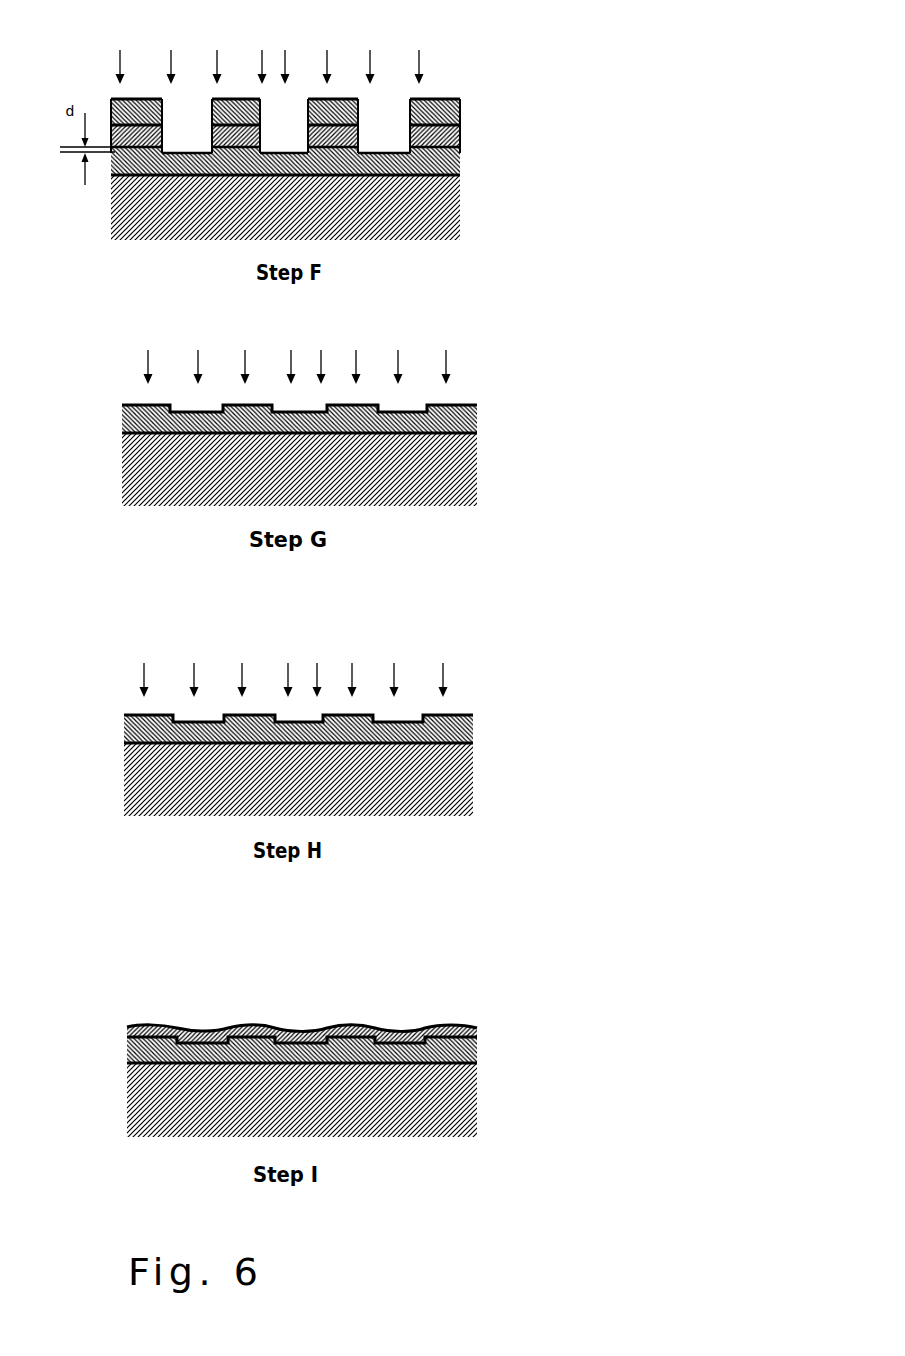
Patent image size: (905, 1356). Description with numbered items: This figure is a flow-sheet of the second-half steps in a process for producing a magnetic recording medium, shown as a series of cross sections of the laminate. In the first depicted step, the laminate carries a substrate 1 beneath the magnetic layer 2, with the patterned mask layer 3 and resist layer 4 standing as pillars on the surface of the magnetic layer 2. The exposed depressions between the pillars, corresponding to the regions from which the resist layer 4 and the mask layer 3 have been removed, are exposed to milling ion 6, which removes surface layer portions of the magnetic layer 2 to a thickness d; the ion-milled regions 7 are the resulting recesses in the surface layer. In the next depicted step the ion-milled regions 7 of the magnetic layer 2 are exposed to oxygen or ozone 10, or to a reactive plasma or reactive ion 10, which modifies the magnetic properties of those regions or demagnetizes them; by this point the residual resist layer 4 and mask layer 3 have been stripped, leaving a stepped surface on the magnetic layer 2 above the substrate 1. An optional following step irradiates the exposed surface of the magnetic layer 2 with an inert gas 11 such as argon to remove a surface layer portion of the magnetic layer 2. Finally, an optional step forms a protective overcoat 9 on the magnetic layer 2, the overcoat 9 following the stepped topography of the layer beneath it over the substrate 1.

The substrate 1 is at (460, 210).
The magnetic layer 2 is at (460, 163).
The mask layer 3 is at (460, 137).
The resist layer 4 is at (460, 108).
The milling ion 6 is at (420, 58).
The ion-milled regions 7 is at (387, 150).
The protective overcoat 9 is at (477, 1028).
The oxygen or ozone 10 is at (445, 360).
The inert gas 11 is at (443, 672).